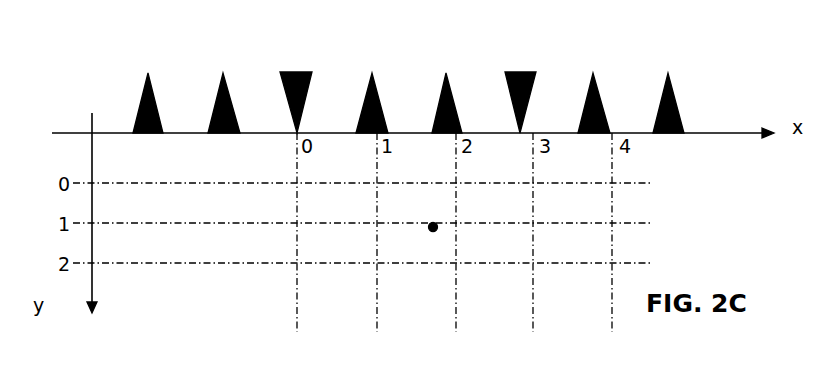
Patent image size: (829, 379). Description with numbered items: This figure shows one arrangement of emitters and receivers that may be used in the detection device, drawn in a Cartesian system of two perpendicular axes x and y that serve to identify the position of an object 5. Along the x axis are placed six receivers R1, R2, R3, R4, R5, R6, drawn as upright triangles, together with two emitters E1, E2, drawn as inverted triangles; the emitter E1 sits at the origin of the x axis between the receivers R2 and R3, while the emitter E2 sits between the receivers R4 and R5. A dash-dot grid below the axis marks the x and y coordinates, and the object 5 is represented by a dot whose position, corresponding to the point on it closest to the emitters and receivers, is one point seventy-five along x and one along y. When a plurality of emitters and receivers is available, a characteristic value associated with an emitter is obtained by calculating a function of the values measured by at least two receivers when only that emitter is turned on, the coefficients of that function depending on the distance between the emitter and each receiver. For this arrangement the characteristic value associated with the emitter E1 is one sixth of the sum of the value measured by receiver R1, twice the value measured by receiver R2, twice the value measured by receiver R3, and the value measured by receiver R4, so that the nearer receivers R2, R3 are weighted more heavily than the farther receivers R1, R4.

The receiver R1 is at (140, 100).
The receiver R2 is at (210, 102).
The receiver R3 is at (364, 102).
The receiver R4 is at (436, 106).
The receiver R5 is at (585, 103).
The receiver R6 is at (660, 105).
The emitter E1 is at (293, 72).
The emitter E2 is at (522, 72).
The object 5 is at (430, 234).